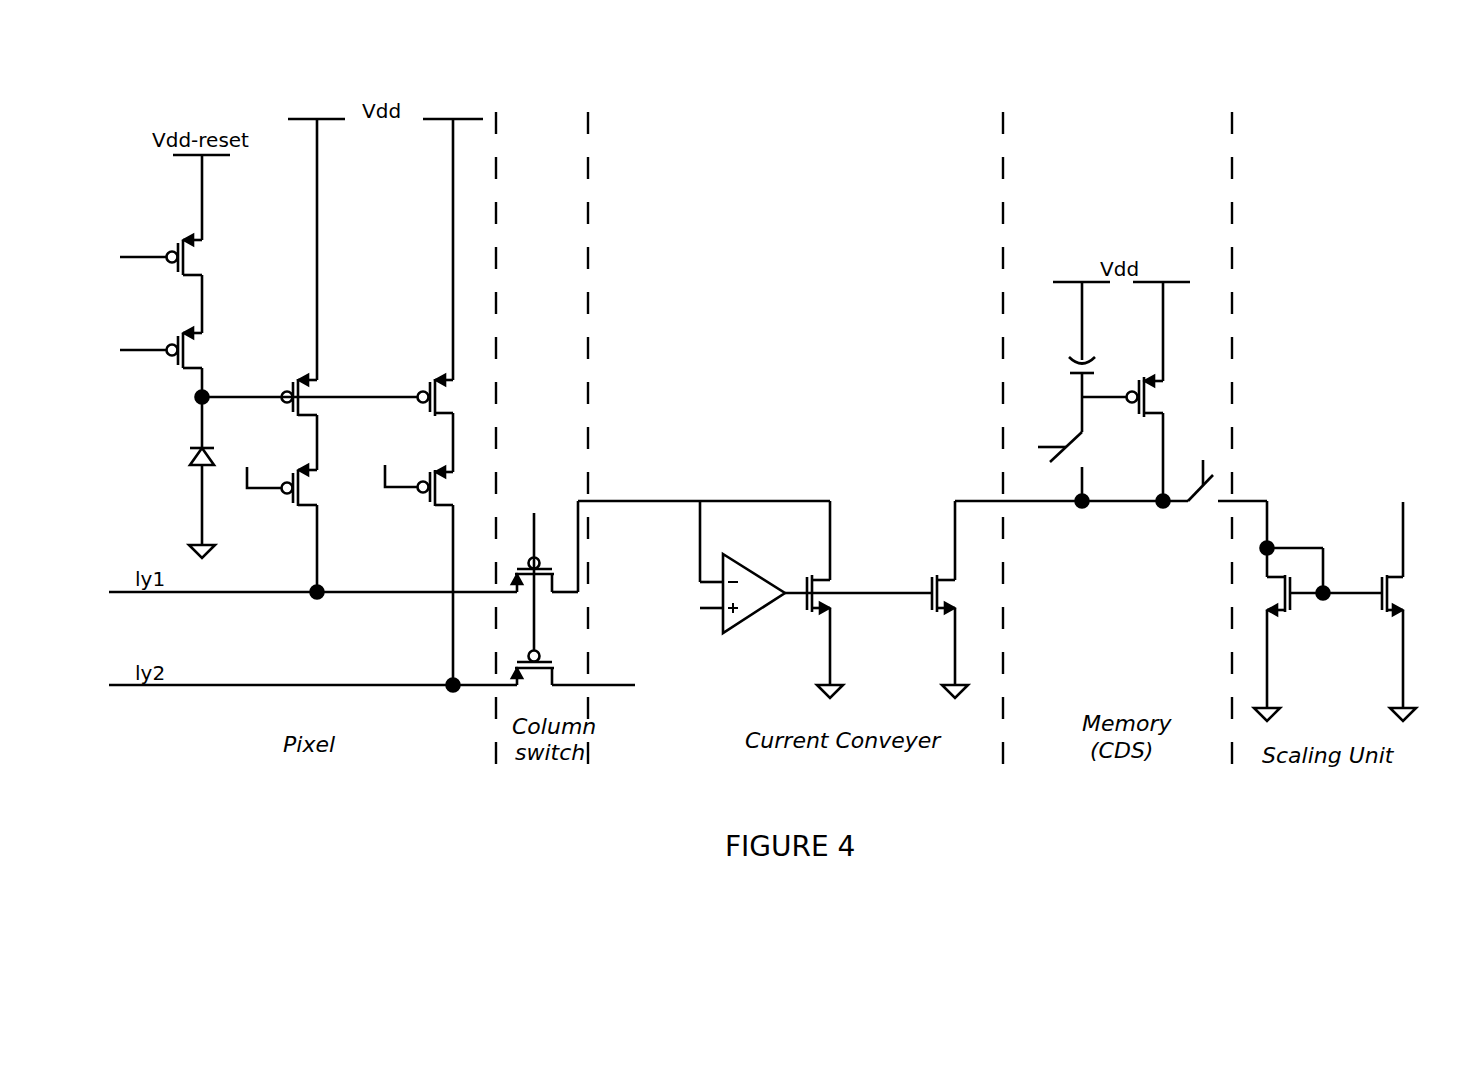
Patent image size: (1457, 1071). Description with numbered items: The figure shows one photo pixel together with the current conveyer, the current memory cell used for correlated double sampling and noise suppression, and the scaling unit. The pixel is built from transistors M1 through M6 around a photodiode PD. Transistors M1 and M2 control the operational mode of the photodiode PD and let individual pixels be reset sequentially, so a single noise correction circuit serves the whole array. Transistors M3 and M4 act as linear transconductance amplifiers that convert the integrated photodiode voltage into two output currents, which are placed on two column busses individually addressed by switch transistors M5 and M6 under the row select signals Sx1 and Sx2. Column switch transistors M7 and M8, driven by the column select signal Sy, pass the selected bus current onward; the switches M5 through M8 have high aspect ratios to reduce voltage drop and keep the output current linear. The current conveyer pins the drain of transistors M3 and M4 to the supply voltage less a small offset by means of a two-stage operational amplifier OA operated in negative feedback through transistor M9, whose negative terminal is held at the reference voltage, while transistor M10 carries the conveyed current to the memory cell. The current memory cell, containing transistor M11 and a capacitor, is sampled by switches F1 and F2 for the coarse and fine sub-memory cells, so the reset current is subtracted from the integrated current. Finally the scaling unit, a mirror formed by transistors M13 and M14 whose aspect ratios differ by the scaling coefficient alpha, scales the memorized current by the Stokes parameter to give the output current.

The transistor M1 is at (177, 279).
The transistor M2 is at (177, 357).
The transistor M3 is at (316, 416).
The transistor M4 is at (453, 417).
The switch transistor M5 is at (316, 522).
The switch transistor M6 is at (453, 569).
The switch transistor M7 is at (545, 591).
The switch transistor M8 is at (545, 683).
The transistor M9 is at (836, 599).
The transistor M10 is at (967, 599).
The transistor M11 is at (1167, 391).
The transistor M13 is at (1280, 648).
The transistor M14 is at (1417, 600).
The photodiode PD is at (185, 457).
The operational amplifier OA is at (728, 628).
The coarse memory sampling switch F1 is at (1047, 466).
The fine memory sampling switch F2 is at (1227, 467).
The row select signal Sx1 is at (256, 466).
The row select signal Sx2 is at (394, 465).
The column select signal Sy is at (536, 570).